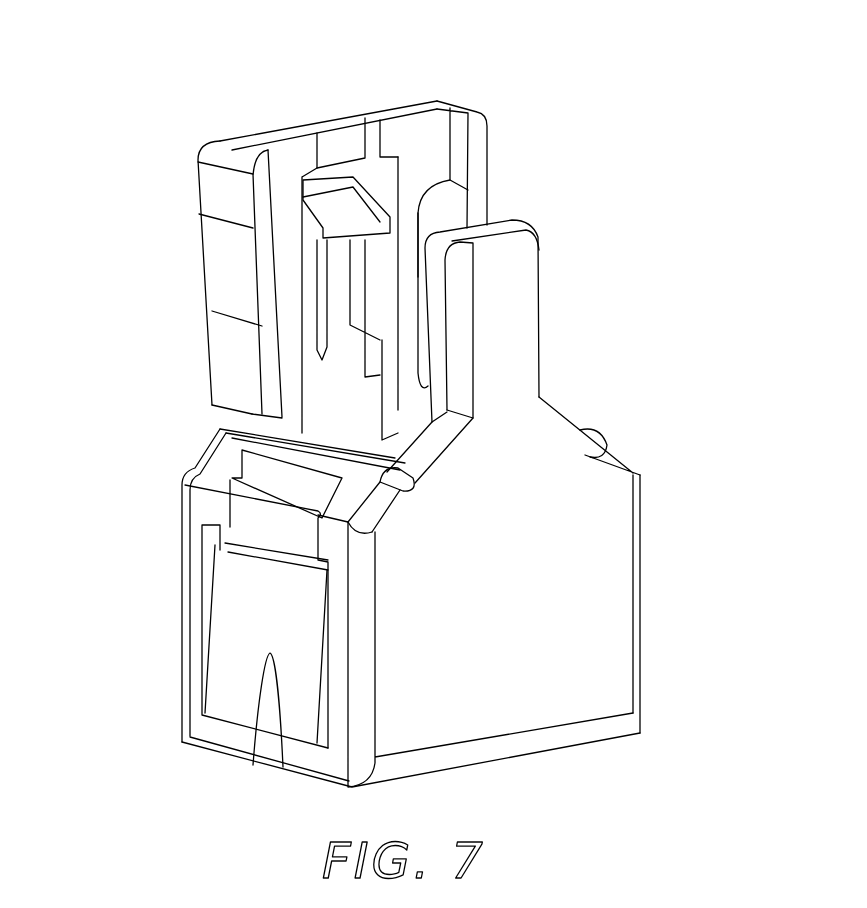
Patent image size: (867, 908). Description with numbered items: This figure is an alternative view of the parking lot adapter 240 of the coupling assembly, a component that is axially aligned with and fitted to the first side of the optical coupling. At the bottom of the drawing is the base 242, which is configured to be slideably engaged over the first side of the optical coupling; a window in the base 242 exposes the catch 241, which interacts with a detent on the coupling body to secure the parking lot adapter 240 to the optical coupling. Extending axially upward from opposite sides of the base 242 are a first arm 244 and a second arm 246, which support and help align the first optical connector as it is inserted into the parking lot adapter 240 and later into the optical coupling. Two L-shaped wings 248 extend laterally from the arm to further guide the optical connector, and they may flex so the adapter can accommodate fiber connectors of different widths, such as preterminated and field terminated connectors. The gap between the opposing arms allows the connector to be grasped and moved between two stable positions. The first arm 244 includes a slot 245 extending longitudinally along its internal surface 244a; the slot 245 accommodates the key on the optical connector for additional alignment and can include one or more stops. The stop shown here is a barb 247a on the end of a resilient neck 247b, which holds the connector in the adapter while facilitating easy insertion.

The parking lot adapter 240 is at (140, 100).
The catch 241 is at (248, 610).
The base 242 is at (280, 137).
The first arm 244 is at (315, 125).
The internal surface 244a is at (423, 135).
The slot 245 is at (345, 132).
The second arm 246 is at (510, 327).
The barb 247a is at (317, 231).
The resilient neck 247b is at (343, 295).
The L-shaped wings 248 is at (262, 193).